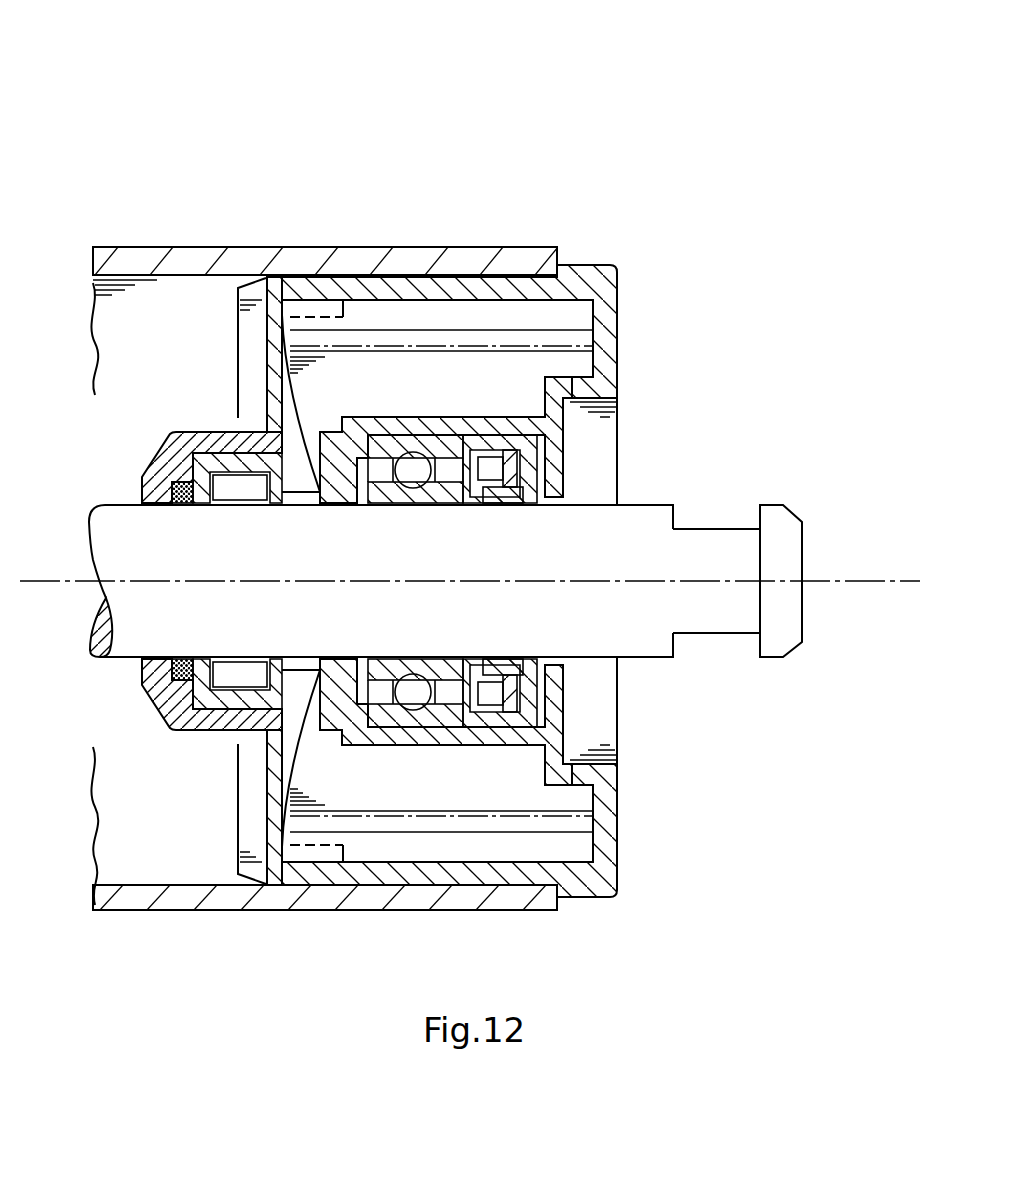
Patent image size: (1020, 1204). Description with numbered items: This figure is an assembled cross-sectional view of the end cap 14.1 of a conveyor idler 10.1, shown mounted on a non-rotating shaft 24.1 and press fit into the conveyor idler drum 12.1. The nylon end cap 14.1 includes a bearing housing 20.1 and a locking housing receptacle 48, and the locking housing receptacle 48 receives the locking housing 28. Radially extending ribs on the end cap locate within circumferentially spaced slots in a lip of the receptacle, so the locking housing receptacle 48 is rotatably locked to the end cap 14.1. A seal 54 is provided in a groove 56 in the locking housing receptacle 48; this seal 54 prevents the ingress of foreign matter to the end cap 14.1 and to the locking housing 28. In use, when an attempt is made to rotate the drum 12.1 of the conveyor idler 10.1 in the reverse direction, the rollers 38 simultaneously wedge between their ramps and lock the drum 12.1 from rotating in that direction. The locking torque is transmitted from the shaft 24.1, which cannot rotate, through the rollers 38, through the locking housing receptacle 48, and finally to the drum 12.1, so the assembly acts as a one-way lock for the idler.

The conveyor idler 10.1 is at (470, 463).
The conveyor idler drum 12.1 is at (327, 248).
The end cap 14.1 is at (612, 327).
The bearing housing 20.1 is at (418, 433).
The shaft 24.1 is at (792, 543).
The locking housing 28 is at (195, 683).
The rollers 38 is at (230, 483).
The locking housing receptacle 48 is at (190, 728).
The seal 54 is at (165, 452).
The groove 56 is at (185, 483).